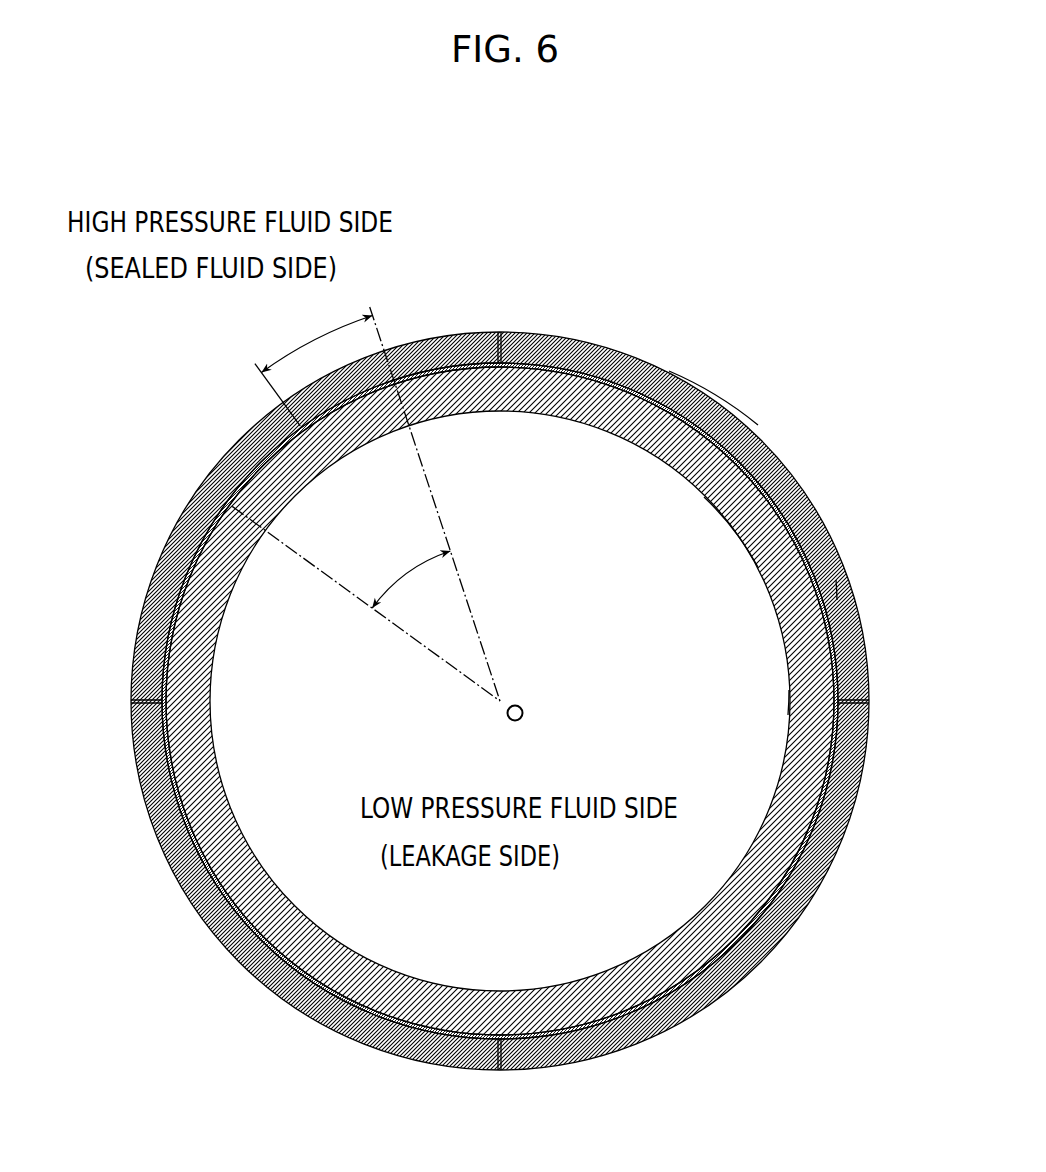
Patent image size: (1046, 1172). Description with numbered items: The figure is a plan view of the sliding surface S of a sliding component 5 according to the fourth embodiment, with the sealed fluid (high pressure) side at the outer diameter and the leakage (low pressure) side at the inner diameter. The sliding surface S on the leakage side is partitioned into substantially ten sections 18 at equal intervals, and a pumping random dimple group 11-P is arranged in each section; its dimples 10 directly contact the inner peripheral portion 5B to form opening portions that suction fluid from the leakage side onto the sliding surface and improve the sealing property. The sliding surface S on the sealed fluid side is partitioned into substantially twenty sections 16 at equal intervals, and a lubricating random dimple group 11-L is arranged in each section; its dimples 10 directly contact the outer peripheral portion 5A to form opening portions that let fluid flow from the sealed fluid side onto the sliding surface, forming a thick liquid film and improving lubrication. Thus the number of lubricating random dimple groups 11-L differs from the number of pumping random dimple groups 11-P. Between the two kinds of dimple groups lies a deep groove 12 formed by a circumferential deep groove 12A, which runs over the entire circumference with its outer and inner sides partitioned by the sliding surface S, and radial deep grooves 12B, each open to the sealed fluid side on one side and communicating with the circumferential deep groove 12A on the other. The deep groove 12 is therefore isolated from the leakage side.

The seal ring 5 is at (205, 390).
The outer peripheral portion 5A is at (615, 1063).
The inner peripheral portion 5B is at (595, 978).
The dimples 10 is at (670, 372).
The lubricating random dimple group 11-L is at (754, 421).
The pumping random dimple group 11-P is at (702, 499).
The deep groove 12 is at (605, 258).
The circumferential deep groove 12A is at (498, 332).
The radial deep grooves 12B is at (565, 355).
The sections 16 is at (377, 504).
The sections 18 is at (366, 603).
The sliding surface S is at (842, 588).